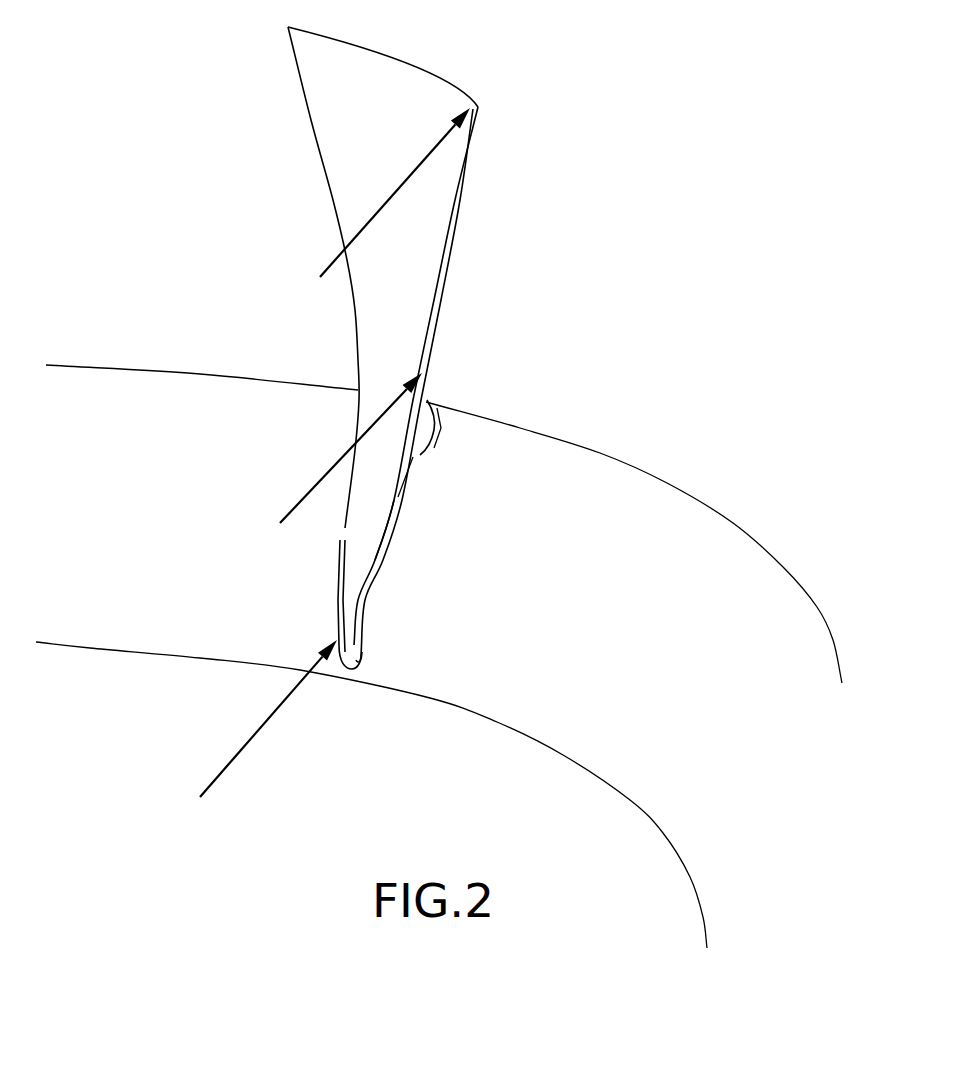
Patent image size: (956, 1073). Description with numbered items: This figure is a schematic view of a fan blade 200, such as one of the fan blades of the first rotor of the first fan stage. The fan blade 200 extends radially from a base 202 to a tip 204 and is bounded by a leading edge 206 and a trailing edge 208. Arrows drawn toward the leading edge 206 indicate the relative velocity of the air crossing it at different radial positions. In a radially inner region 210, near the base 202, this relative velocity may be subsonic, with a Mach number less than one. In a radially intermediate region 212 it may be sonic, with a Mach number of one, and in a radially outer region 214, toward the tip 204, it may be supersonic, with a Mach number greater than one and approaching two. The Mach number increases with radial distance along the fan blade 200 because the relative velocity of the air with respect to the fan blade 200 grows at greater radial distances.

The fan blade 200 is at (232, 106).
The base 202 is at (420, 453).
The tip 204 is at (417, 68).
The leading edge 206 is at (387, 520).
The trailing edge 208 is at (430, 393).
The radially inner region 210 is at (235, 757).
The radially intermediate region 212 is at (323, 483).
The radially outer region 214 is at (363, 230).